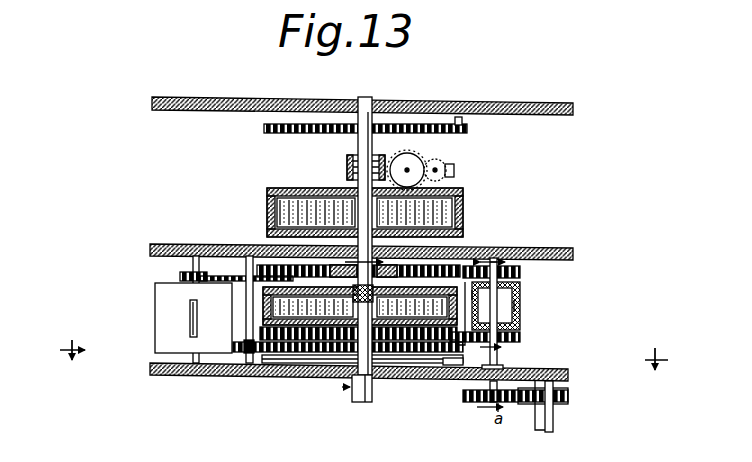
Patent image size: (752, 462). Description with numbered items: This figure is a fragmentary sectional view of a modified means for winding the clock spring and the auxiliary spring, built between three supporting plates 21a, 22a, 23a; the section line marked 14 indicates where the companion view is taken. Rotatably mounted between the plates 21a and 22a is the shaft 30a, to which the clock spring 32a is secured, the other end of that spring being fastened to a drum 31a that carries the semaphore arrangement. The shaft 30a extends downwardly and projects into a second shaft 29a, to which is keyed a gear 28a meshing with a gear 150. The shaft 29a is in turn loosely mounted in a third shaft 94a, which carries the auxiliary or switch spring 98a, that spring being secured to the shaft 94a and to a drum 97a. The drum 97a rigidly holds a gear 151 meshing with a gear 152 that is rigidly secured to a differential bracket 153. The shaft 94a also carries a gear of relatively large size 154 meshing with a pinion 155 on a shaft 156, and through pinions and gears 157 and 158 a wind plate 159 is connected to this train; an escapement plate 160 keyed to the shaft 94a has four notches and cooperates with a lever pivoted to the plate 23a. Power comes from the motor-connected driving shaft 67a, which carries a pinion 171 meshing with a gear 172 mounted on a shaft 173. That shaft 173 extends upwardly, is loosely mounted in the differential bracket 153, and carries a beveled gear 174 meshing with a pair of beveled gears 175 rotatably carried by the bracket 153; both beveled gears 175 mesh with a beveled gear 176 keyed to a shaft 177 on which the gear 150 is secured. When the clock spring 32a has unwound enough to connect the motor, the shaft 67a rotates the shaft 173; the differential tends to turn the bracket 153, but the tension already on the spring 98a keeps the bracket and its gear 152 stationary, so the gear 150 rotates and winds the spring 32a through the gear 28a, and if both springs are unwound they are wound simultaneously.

The supporting plate 21a is at (362, 90).
The supporting plate 22a is at (153, 244).
The supporting plate 23a is at (236, 375).
The shaft 30a is at (358, 143).
The drum 31a is at (463, 217).
The clock spring 32a is at (462, 197).
The gear 28a is at (267, 265).
The second shaft 29a is at (354, 281).
The shaft 156 is at (248, 265).
The pinion 157 is at (180, 276).
The gear 158 is at (203, 278).
The wind plate 159 is at (160, 323).
The auxiliary or switch spring 98a is at (277, 298).
The drum 97a is at (263, 310).
The gear 151 is at (255, 332).
The gear of relatively large size 154 is at (316, 350).
The pinion 155 is at (252, 345).
The escapement plate 160 is at (440, 362).
The third shaft 94a is at (352, 398).
The gear 150 is at (520, 273).
The gear 152 is at (520, 337).
The differential bracket 153 is at (525, 313).
The beveled gear 174 is at (518, 304).
The beveled gears 175 is at (495, 305).
The beveled gear 176 is at (512, 296).
The shaft 177 is at (494, 263).
The shaft 173 is at (495, 362).
The pinion 171 is at (568, 397).
The gear 172 is at (474, 403).
The driving shaft 67a is at (553, 418).
The section line 14 is at (362, 355).